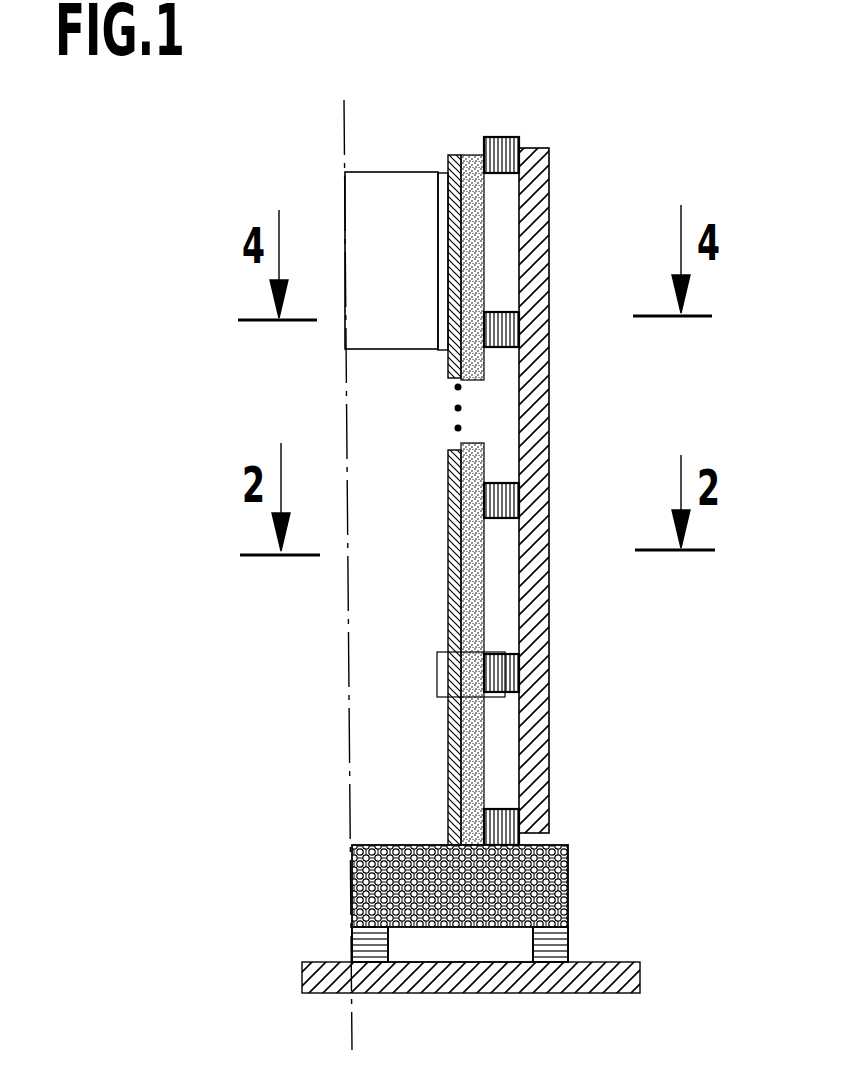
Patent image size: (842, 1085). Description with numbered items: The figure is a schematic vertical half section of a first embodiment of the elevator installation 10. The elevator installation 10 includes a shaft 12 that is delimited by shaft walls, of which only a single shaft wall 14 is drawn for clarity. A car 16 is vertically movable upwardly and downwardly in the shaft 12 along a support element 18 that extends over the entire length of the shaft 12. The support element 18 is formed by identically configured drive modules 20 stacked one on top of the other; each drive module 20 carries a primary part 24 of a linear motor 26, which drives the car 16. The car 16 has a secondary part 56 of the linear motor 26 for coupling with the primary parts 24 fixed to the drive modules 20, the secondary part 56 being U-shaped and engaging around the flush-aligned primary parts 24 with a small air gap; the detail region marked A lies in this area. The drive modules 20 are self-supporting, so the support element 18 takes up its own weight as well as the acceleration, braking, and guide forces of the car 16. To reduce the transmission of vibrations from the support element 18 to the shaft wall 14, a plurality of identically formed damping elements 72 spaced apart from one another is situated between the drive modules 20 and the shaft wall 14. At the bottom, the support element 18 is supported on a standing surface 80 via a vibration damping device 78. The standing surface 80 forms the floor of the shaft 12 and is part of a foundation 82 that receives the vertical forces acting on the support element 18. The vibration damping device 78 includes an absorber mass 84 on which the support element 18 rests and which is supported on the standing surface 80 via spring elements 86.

The elevator installation 10 is at (298, 145).
The shaft 12 is at (380, 568).
The shaft wall 14 is at (545, 415).
The car 16 is at (372, 323).
The support element 18 is at (430, 740).
The drive module 20 is at (475, 212).
The primary part 24 is at (452, 155).
The linear motor 26 is at (425, 370).
The secondary part 56 is at (440, 168).
The damping element 72 is at (505, 138).
The vibration damping device 78 is at (337, 893).
The standing surface 80 is at (485, 955).
The foundation 82 is at (508, 978).
The absorber mass 84 is at (568, 880).
The spring element 86 is at (568, 945).
The region A is at (437, 668).